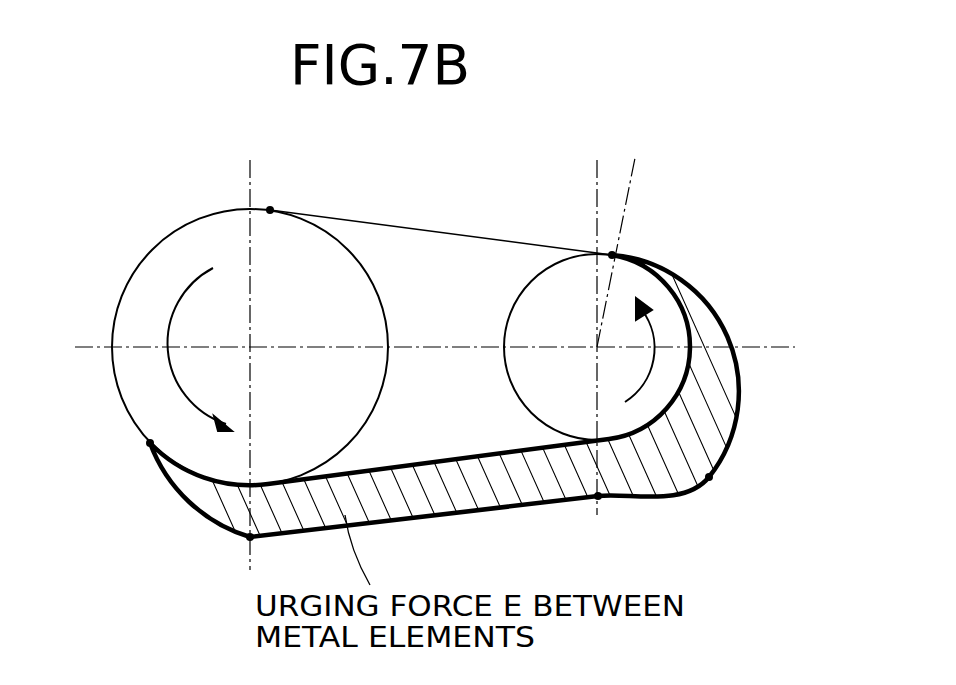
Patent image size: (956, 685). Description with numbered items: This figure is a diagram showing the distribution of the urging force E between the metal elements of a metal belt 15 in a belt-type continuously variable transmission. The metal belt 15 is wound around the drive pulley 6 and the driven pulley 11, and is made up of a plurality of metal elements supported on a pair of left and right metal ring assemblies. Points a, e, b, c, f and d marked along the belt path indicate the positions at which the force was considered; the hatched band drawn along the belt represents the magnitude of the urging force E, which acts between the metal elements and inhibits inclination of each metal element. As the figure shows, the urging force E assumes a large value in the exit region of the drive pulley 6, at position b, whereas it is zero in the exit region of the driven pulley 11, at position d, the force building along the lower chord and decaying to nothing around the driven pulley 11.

The drive pulley 6 is at (163, 233).
The driven pulley 11 is at (543, 268).
The metal belt 15 is at (347, 220).